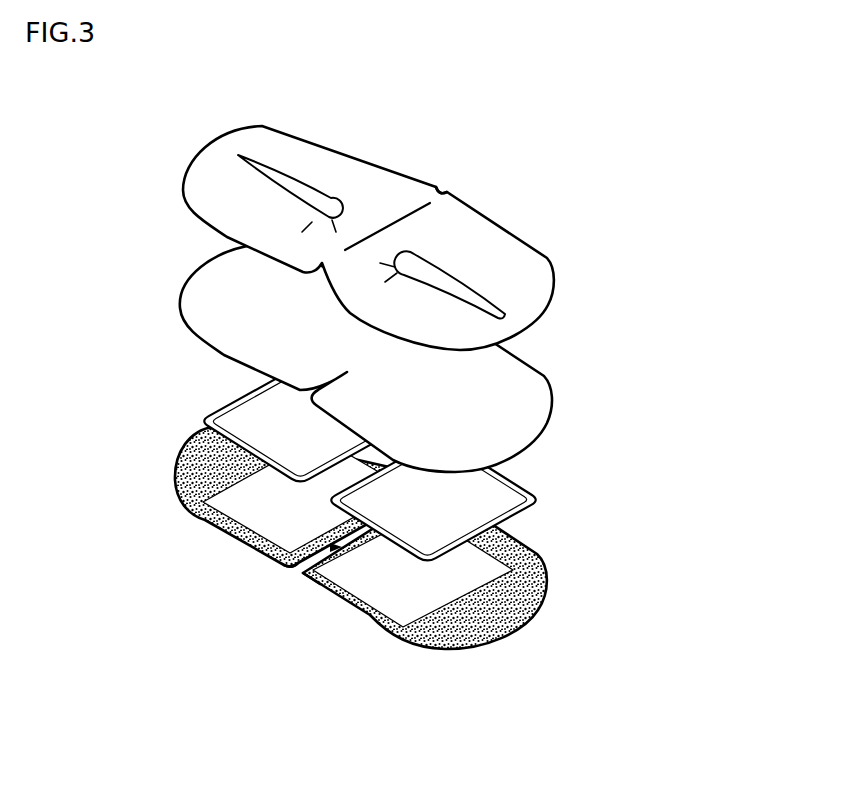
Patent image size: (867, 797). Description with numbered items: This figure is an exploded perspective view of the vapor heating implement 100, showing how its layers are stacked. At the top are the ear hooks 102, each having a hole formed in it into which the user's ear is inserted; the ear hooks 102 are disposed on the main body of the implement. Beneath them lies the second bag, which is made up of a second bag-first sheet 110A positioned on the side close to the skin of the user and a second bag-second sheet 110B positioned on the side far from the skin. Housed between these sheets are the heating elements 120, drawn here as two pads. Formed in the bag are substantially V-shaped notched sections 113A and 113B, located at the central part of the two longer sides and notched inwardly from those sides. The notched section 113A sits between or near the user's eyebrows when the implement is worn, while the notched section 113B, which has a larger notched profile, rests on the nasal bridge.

The vapor heating implement 100 is at (375, 359).
The ear hook 102 is at (183, 195).
The second bag-first sheet 110A is at (513, 385).
The second bag-second sheet 110B is at (520, 630).
The notched section 113A is at (455, 183).
The notched section 113B is at (287, 584).
The heating element 120 is at (197, 422).